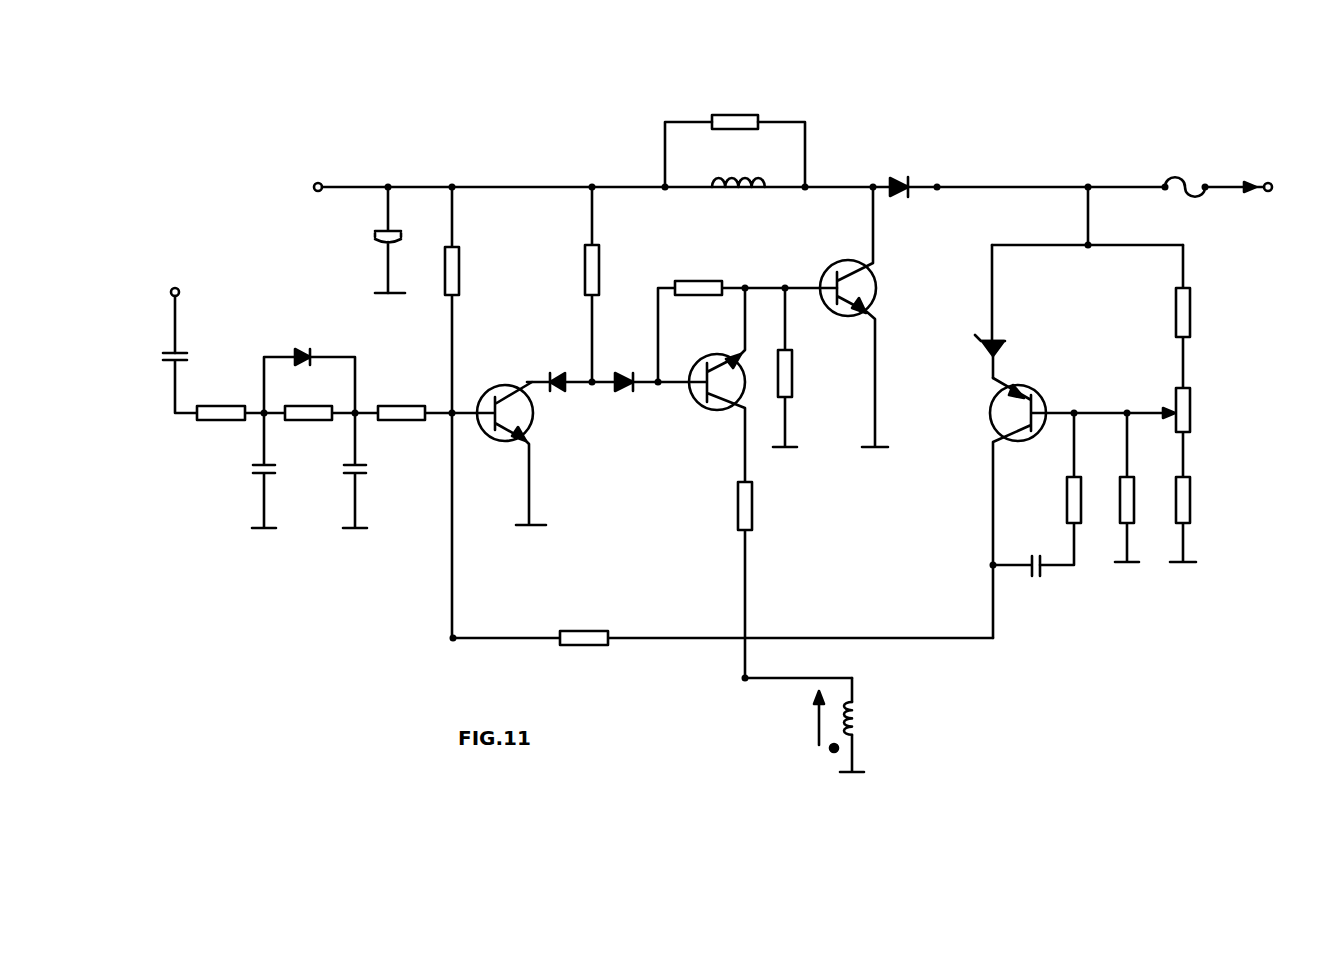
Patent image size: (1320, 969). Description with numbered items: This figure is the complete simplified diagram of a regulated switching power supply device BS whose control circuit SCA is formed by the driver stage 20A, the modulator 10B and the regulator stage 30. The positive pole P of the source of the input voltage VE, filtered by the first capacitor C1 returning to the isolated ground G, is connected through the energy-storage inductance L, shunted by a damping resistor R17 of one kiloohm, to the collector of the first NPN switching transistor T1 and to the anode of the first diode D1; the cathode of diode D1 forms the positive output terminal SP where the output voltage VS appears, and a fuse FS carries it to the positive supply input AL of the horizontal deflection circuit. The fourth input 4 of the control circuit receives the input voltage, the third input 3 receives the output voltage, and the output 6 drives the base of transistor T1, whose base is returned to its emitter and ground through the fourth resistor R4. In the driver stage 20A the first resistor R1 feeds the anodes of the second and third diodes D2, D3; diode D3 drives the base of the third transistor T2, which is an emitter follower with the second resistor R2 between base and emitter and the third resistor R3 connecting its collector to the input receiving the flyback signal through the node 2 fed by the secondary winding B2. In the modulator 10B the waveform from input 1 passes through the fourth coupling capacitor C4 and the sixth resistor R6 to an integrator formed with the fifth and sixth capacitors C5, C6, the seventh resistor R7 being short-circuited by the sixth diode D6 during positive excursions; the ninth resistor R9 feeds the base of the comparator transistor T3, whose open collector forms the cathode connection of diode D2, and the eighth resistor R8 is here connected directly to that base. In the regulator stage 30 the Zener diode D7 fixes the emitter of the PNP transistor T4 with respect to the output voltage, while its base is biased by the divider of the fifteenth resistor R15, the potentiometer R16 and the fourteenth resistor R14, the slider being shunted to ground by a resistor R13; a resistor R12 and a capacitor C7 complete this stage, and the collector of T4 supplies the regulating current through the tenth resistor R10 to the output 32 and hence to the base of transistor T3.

The input voltage VE is at (298, 188).
The positive pole P is at (322, 183).
The fourth input 4 is at (453, 190).
The first filtering and storage capacitor C1 is at (376, 236).
The ground G is at (388, 293).
The eighth resistor R8 is at (478, 266).
The first resistor R1 is at (585, 280).
The damping resistor R17 is at (737, 115).
The energy-storage inductance L is at (750, 193).
The first diode D1 is at (900, 176).
The positive output terminal SP is at (938, 185).
The power supply device BS is at (851, 168).
The first NPN bipolar switching transistor T1 is at (833, 266).
The fourth resistor R4 is at (792, 368).
The output 6 is at (785, 285).
The second resistor R2 is at (712, 281).
The third NPN transistor T2 is at (728, 412).
The third resistor R3 is at (738, 512).
The driver stage 20A is at (684, 405).
The second diode D2 is at (571, 399).
The third diode D3 is at (634, 399).
The fourth NPN transistor T3 is at (490, 437).
The input 1 is at (180, 294).
The fourth coupling capacitor C4 is at (178, 372).
The sixth resistor R6 is at (229, 422).
The seventh resistor R7 is at (321, 422).
The ninth resistor R9 is at (419, 422).
The sixth diode D6 is at (305, 348).
The fifth capacitor C5 is at (258, 476).
The sixth capacitor C6 is at (348, 476).
The modulator 10B is at (432, 450).
The third input 3 is at (1090, 242).
The Zener diode D7 is at (1008, 343).
The regulator stage 30 is at (1075, 350).
The fifth PNP transistor T4 is at (1050, 400).
The resistor R12 is at (1066, 507).
The capacitor C7 is at (1042, 580).
The resistor R13 is at (1120, 506).
The fifteenth resistor R15 is at (1176, 322).
The potentiometer R16 is at (1208, 406).
The fourteenth resistor R14 is at (1208, 488).
The fuse FS is at (1185, 182).
The positive supply input AL is at (1266, 183).
The output voltage VS is at (1245, 208).
The output 32 is at (456, 634).
The tenth resistor R10 is at (586, 631).
The input 2 is at (742, 677).
The secondary winding B2 is at (862, 738).
The control circuit SCA is at (862, 645).